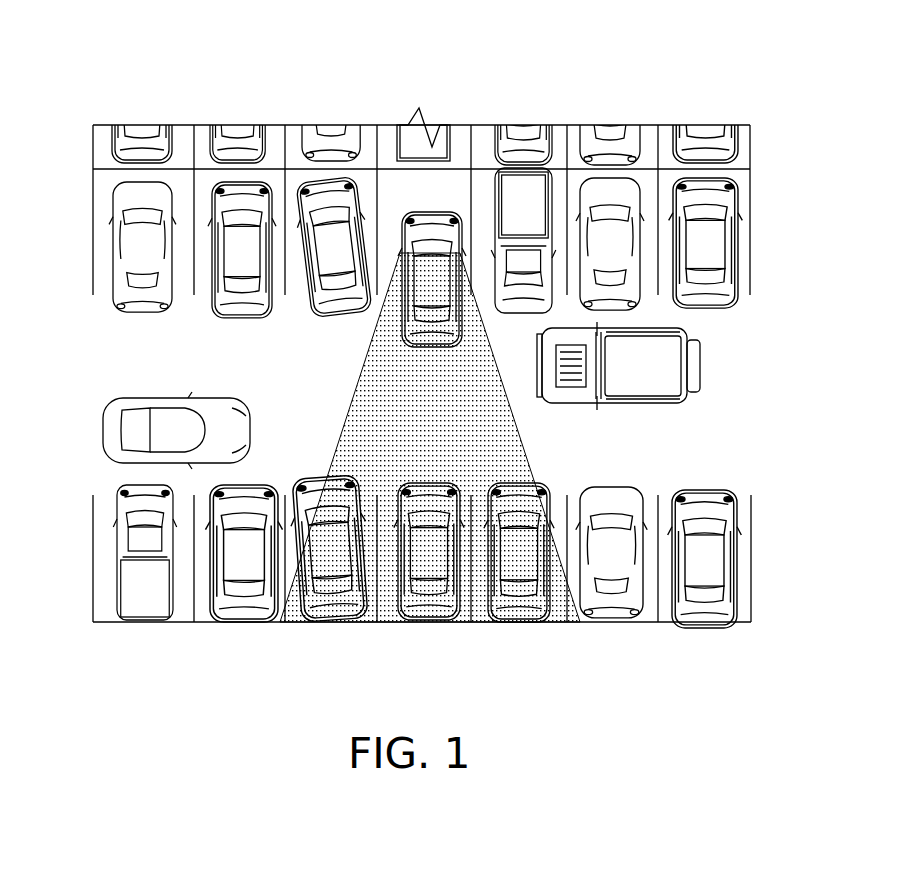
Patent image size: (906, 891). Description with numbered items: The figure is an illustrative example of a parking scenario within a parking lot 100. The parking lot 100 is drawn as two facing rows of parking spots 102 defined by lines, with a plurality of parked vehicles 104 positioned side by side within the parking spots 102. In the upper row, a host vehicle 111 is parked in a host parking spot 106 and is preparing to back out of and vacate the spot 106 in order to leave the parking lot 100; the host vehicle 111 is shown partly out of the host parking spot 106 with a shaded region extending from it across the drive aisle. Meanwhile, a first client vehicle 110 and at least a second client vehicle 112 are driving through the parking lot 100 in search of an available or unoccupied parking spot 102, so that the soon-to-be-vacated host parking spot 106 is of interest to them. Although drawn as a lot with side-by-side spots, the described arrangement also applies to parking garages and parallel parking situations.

The parking lot 100 is at (107, 80).
The parking spots 102 is at (452, 645).
The parked vehicles 104 is at (705, 195).
The host parking spot 106 is at (395, 188).
The first client vehicle 110 is at (668, 365).
The host vehicle 111 is at (422, 223).
The second client vehicle 112 is at (132, 430).